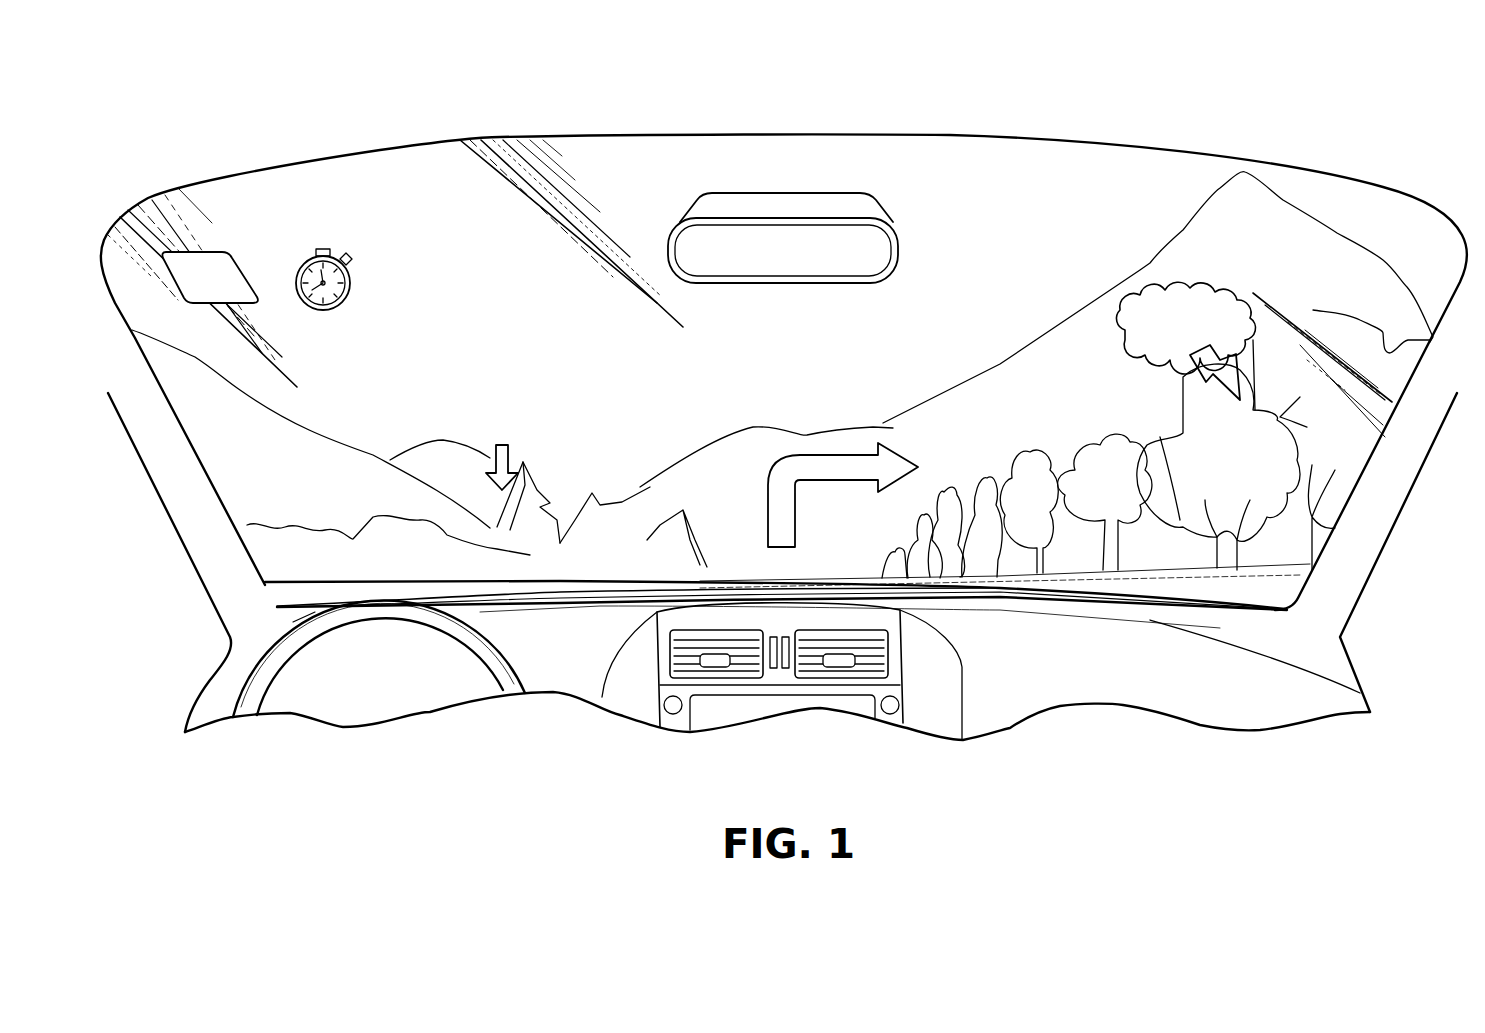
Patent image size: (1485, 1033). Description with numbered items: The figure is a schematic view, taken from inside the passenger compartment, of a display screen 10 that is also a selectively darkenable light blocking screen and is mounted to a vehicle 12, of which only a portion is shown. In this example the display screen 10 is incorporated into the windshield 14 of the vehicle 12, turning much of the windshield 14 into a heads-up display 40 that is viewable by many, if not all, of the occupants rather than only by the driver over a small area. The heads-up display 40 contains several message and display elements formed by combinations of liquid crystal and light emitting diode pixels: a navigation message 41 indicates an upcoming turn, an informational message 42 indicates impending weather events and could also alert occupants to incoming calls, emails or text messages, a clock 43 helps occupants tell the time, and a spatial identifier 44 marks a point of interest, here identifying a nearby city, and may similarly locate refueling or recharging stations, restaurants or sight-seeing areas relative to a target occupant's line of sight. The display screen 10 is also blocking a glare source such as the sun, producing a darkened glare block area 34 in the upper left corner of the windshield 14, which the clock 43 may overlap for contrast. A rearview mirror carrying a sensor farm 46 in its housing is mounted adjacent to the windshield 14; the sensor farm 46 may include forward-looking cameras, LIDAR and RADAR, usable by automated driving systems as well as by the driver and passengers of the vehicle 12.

The display screen 10 is at (532, 112).
The vehicle 12 is at (552, 717).
The windshield 14 is at (1036, 160).
The glare block area 34 is at (214, 270).
The heads-up display 40 is at (983, 614).
The navigation message 41 is at (740, 482).
The informational message 42 is at (1148, 300).
The clock 43 is at (352, 282).
The spatial identifier 44 is at (497, 460).
The sensor farm 46 is at (660, 226).